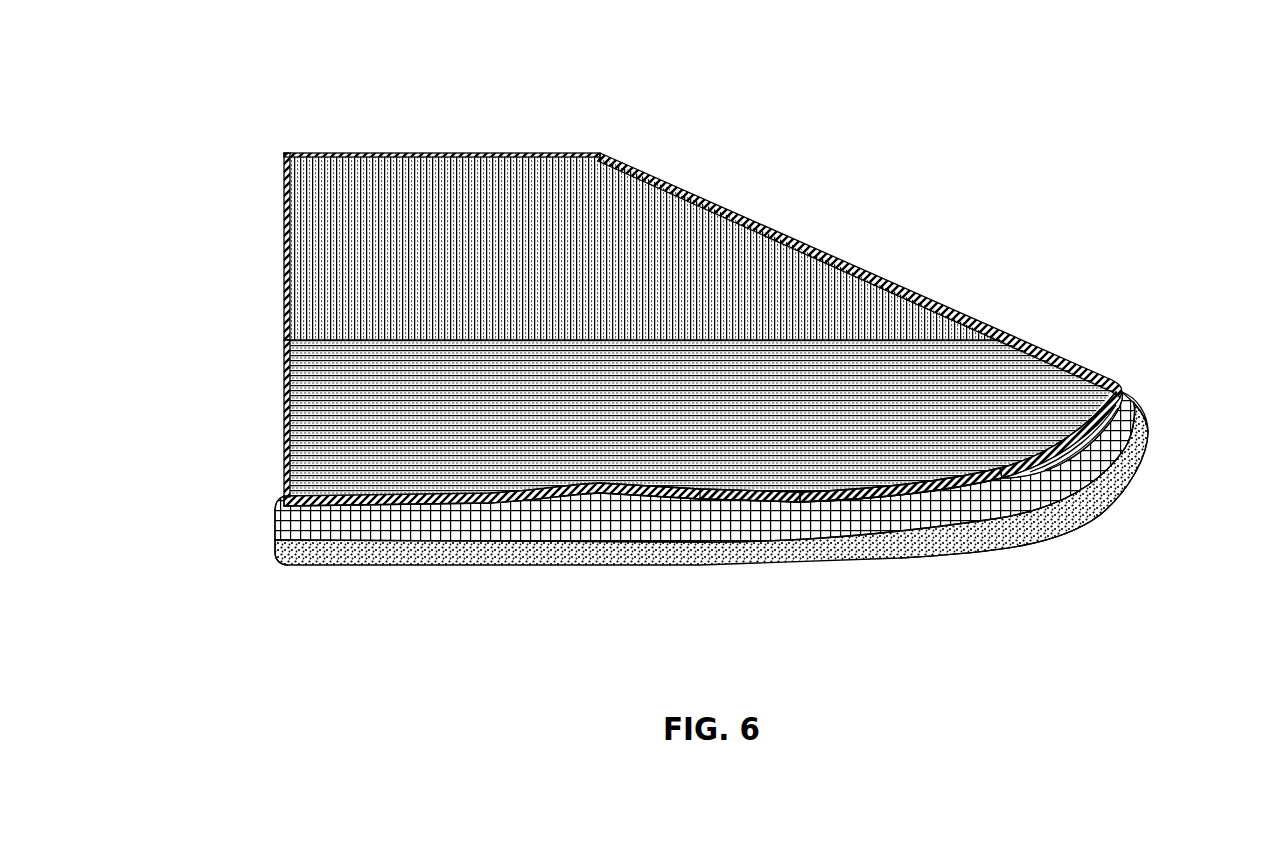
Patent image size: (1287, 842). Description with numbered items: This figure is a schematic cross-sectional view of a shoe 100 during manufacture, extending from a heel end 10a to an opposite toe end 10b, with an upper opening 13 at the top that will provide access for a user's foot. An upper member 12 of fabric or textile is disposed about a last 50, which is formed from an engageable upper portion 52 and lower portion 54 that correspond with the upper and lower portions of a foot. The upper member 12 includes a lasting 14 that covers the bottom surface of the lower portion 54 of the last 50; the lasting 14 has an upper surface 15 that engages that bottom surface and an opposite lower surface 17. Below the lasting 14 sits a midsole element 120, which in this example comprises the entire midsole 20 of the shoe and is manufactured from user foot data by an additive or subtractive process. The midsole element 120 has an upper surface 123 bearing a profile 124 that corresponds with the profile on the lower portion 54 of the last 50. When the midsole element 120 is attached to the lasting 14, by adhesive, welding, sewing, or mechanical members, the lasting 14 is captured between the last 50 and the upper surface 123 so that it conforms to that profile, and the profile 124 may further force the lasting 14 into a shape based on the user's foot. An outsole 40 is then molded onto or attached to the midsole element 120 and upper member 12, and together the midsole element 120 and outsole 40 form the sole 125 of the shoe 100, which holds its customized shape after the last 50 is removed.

The shoe 100 is at (926, 116).
The upper opening 13 is at (393, 151).
The upper member 12 is at (680, 185).
The last 50 is at (822, 245).
The upper portion 52 is at (286, 238).
The lower portion 54 is at (288, 398).
The midsole 20 is at (1128, 388).
The heel end 10a is at (256, 512).
The toe end 10b is at (1166, 399).
The upper surface 123 is at (336, 506).
The profile 124 is at (585, 484).
The upper surface 15 is at (786, 485).
The lower surface 17 is at (853, 503).
The lasting 14 is at (1013, 483).
The midsole element 120 is at (483, 527).
The sole 125 is at (311, 575).
The outsole 40 is at (1121, 493).